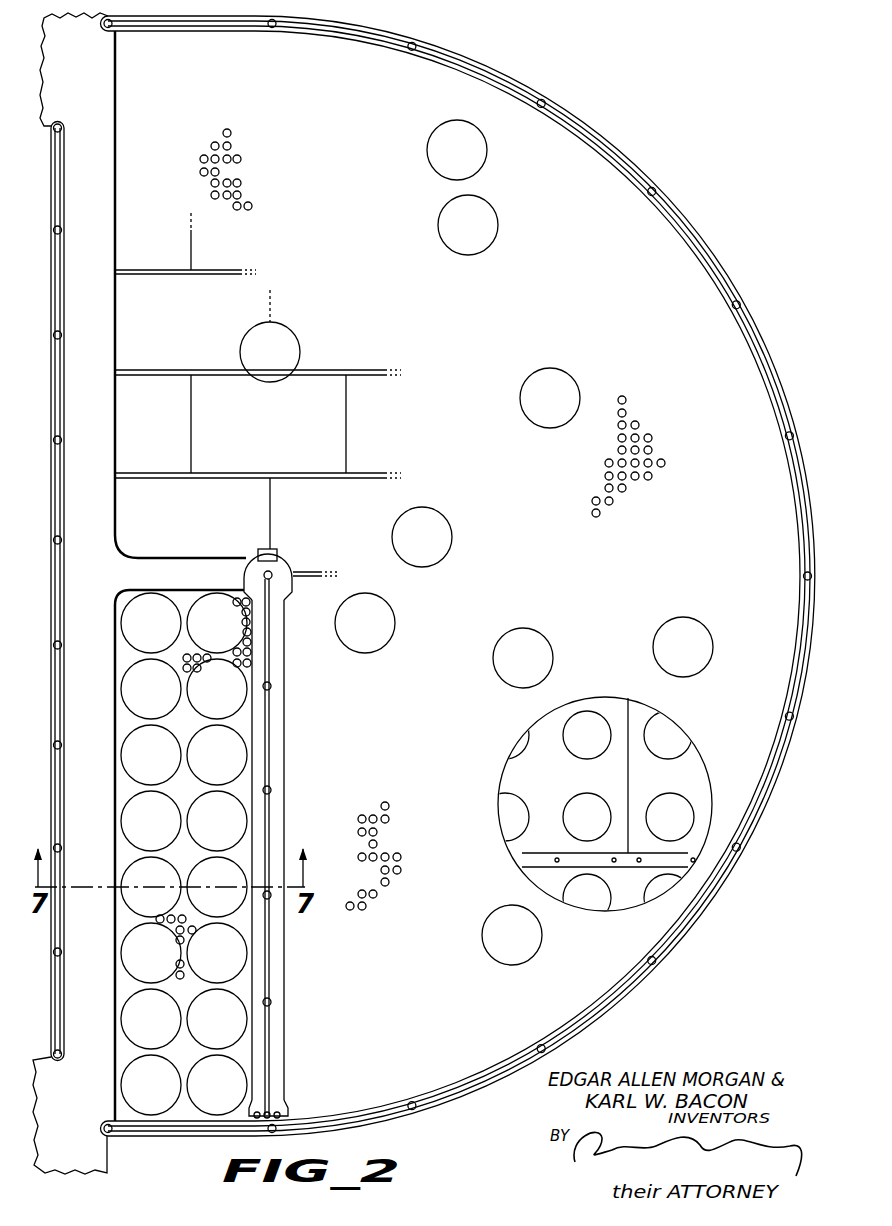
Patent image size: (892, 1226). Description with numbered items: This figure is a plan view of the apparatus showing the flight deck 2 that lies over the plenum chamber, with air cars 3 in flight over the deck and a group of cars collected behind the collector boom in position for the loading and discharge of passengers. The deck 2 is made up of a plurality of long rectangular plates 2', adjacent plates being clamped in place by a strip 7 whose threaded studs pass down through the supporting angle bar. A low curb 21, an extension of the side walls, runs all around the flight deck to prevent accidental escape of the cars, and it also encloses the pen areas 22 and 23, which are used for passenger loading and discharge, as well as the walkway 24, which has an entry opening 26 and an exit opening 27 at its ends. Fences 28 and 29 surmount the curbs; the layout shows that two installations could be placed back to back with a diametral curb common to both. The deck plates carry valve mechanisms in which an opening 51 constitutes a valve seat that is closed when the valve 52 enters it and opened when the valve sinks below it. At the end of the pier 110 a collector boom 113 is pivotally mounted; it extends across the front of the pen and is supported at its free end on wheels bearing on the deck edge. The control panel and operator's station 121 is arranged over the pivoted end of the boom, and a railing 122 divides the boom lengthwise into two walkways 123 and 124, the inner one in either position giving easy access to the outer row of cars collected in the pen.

The flight deck 2 is at (400, 576).
The rectangular plates 2' is at (505, 571).
The air cars 3 is at (503, 230).
The strip 7 is at (200, 270).
The curb 21 is at (698, 228).
The pen area 22 is at (190, 342).
The pen area 23 is at (245, 852).
The walkway 24 is at (100, 517).
The entry opening 26 is at (81, 49).
The exit opening 27 is at (79, 1119).
The fence 28 is at (64, 605).
The fence 29 is at (758, 337).
The opening 51 is at (589, 715).
The valve 52 is at (648, 478).
The pier 110 is at (218, 587).
The collector boom 113 is at (292, 1011).
The control panel and operator's station 121 is at (278, 549).
The railing 122 is at (276, 731).
The walkway 123 is at (266, 768).
The walkway 124 is at (272, 797).